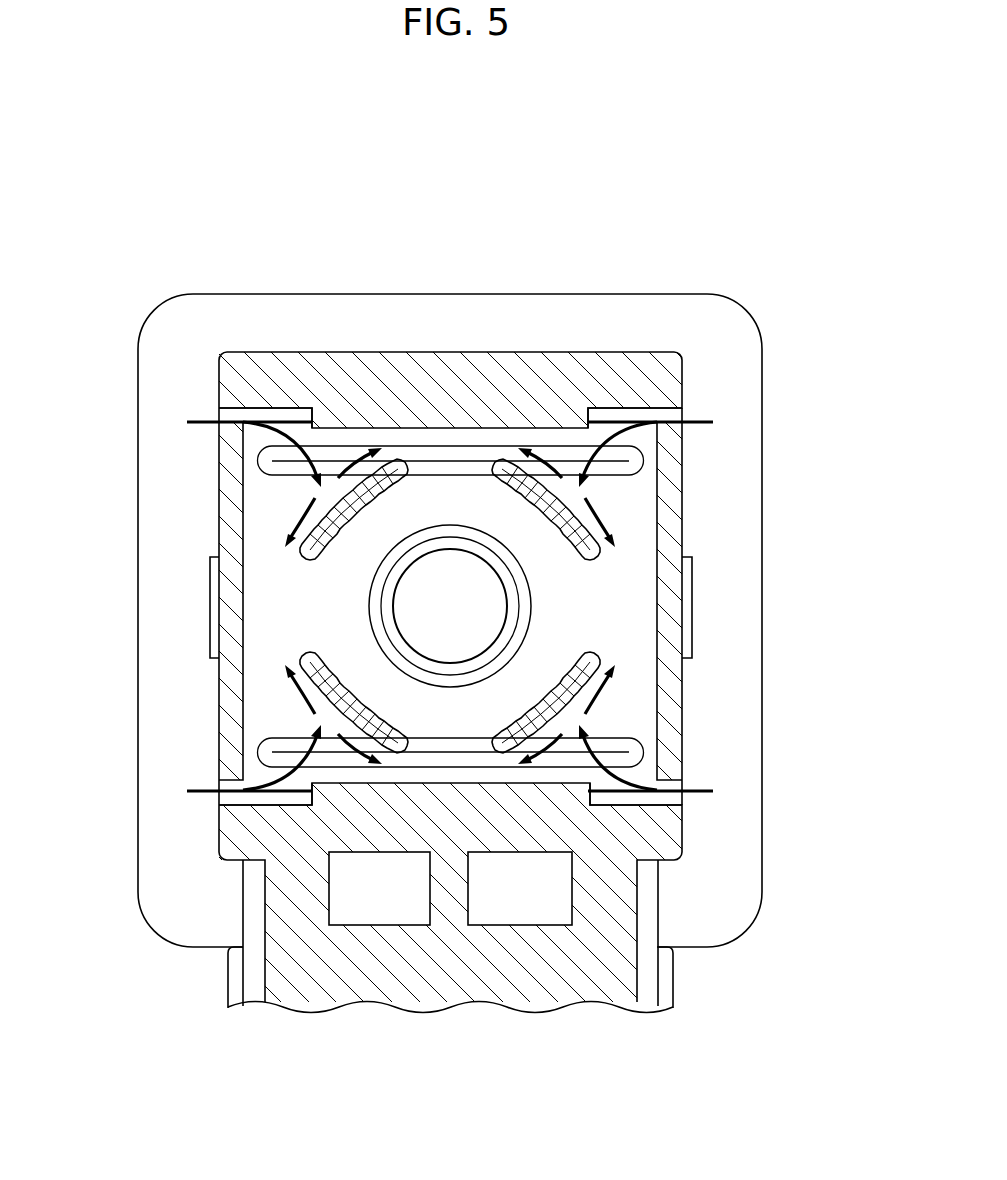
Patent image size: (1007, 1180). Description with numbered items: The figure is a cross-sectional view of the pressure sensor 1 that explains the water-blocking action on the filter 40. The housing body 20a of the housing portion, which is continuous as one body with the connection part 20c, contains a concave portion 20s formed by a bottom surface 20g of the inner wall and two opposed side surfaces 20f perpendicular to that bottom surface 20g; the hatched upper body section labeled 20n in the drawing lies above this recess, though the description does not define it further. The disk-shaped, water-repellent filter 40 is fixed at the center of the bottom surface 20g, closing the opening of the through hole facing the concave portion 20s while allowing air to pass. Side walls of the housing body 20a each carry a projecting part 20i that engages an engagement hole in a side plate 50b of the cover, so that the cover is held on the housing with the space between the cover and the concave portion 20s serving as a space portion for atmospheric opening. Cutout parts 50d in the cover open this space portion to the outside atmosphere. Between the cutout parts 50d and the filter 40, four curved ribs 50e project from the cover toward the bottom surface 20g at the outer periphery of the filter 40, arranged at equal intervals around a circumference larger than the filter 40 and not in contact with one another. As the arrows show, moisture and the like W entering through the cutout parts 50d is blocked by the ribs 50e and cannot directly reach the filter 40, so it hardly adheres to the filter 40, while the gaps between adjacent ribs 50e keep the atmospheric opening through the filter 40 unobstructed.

The pressure sensor 1 is at (718, 150).
The housing body 20a is at (220, 840).
The connection part 20c is at (712, 327).
The side surfaces 20f is at (627, 413).
The bottom surface 20g is at (473, 497).
The projecting part 20i is at (210, 606).
The upper body portion 20n is at (330, 430).
The concave portion 20s is at (324, 617).
The filter 40 is at (447, 577).
The side plate 50b is at (240, 478).
The cutout part 50d is at (243, 425).
The rib 50e is at (320, 520).
The moisture and the like W is at (697, 426).